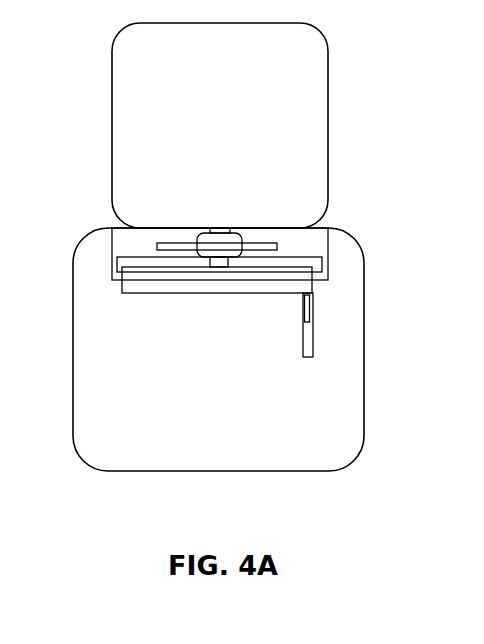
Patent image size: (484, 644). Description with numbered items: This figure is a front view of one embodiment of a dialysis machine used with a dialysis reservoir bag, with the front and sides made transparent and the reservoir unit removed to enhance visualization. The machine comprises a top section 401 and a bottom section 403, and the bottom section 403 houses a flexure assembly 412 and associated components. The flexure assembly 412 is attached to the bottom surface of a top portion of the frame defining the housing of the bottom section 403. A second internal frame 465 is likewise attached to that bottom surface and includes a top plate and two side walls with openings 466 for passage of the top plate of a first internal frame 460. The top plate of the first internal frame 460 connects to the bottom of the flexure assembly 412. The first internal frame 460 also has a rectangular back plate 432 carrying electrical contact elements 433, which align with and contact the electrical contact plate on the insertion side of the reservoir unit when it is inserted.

The top section 401 is at (117, 78).
The bottom section 403 is at (125, 457).
The flexure assembly 412 is at (220, 232).
The back plate 432 is at (313, 342).
The electrical contact elements 433 is at (315, 313).
The first internal frame 460 is at (140, 287).
The second internal frame 465 is at (310, 248).
The openings 466 is at (323, 267).